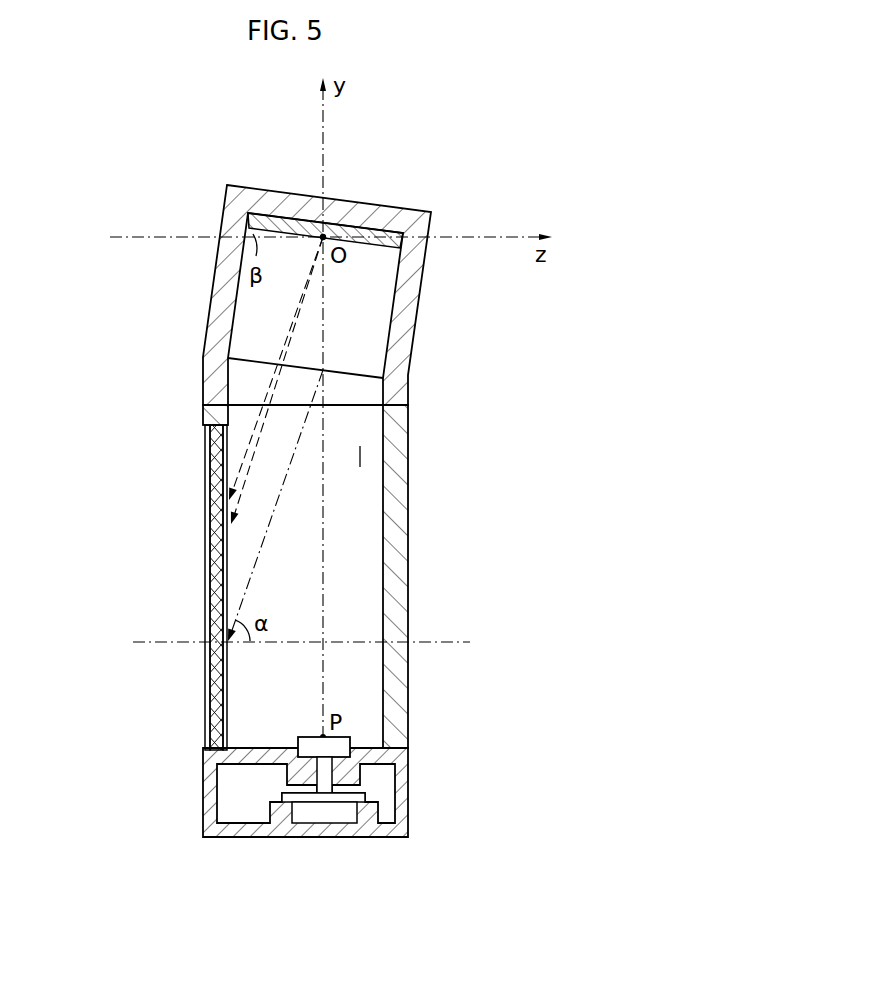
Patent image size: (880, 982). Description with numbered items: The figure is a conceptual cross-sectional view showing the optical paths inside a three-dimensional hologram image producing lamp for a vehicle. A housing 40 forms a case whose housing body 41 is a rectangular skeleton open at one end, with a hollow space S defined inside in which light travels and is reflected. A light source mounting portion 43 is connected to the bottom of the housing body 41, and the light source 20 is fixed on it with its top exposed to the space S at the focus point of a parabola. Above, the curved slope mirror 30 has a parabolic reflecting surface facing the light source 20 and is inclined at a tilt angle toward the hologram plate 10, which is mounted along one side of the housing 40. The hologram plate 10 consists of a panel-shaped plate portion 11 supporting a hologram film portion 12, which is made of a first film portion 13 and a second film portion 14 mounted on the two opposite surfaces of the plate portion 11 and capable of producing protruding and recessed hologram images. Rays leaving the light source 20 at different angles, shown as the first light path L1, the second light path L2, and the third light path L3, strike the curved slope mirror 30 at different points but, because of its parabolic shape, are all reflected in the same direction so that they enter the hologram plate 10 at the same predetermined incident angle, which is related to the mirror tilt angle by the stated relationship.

The hologram plate 10 is at (120, 589).
The plate portion 11 is at (205, 615).
The hologram film portion 12 is at (147, 589).
The first film portion 13 is at (205, 660).
The second film portion 14 is at (117, 655).
The light source 20 is at (350, 738).
The curved slope mirror 30 is at (360, 307).
The housing 40 is at (370, 621).
The housing body 41 is at (395, 532).
The light source mounting portion 43 is at (372, 742).
The space S is at (360, 458).
The first light path L1 is at (255, 562).
The second light path L2 is at (252, 454).
The third light path L3 is at (272, 379).